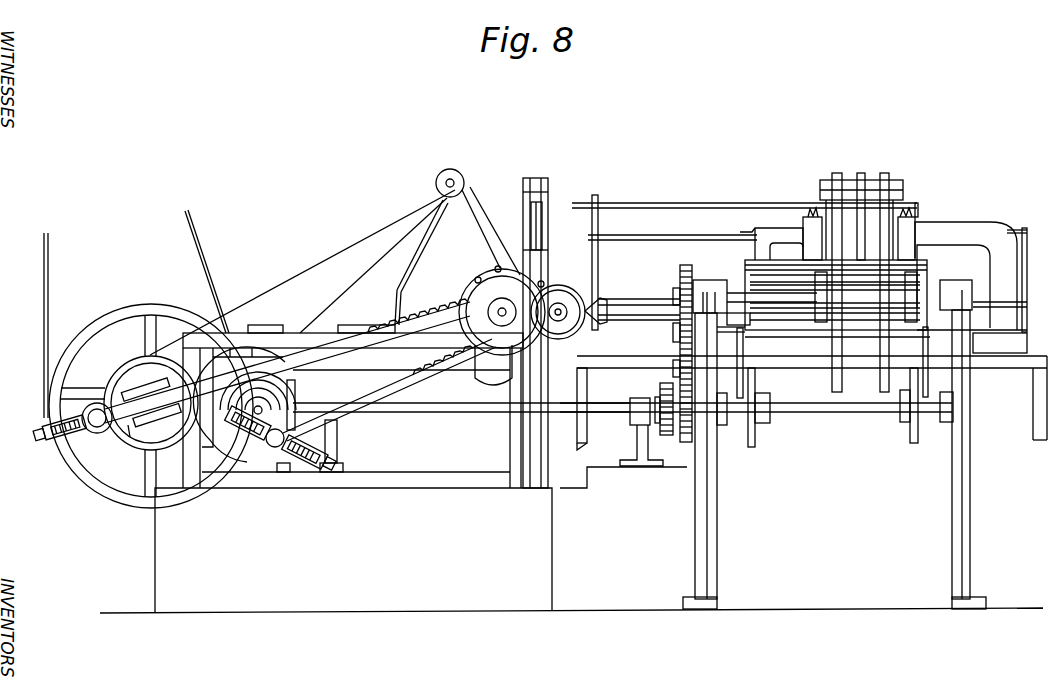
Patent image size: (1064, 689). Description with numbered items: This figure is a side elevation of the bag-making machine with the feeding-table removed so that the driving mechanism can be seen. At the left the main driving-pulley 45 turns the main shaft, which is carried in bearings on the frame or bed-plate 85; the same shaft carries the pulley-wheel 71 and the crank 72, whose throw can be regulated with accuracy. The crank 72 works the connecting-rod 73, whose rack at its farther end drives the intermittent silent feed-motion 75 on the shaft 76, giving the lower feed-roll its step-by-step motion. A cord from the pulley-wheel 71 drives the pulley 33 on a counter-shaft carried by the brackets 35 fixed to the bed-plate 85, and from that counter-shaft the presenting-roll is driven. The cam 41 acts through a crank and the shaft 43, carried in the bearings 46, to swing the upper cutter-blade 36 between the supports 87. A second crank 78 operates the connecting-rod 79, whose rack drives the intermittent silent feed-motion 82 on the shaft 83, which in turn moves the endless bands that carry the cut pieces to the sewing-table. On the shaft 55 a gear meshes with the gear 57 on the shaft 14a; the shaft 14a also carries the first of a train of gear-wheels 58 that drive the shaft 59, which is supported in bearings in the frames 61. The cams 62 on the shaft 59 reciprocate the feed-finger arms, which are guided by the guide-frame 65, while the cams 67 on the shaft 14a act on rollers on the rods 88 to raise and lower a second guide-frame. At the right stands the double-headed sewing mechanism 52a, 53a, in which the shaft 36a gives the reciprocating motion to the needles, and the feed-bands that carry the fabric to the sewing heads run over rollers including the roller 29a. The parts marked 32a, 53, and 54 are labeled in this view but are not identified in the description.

The shaft 14a is at (858, 408).
The roller 29a is at (843, 174).
The cross head 32a is at (914, 184).
The pulley 33 is at (444, 178).
The brackets 35 is at (400, 279).
The upper cutter-blade 36 is at (531, 212).
The shaft 36a is at (627, 237).
The cam 41 is at (103, 388).
The shaft 43 is at (368, 360).
The main driving-pulley 45 is at (166, 316).
The bearings 46 is at (472, 378).
The double-headed sewing mechanism 52a is at (957, 225).
The cam 53 is at (239, 404).
The double-headed sewing mechanism 53a is at (755, 230).
The cam roller 54 is at (300, 396).
The shaft 55 is at (622, 422).
The gear 57 is at (660, 387).
The train of gear-wheels 58 is at (676, 281).
The shaft 59 is at (767, 311).
The frames 61 is at (705, 290).
The cams 62 is at (832, 347).
The guide-frame 65 is at (922, 278).
The cams 67 is at (755, 445).
The pulley-wheel 71 is at (151, 403).
The crank 72 is at (57, 440).
The connecting-rod 73 is at (136, 420).
The intermittent silent feed-motion 75 is at (502, 310).
The shaft 76 is at (505, 310).
The crank 78 is at (305, 470).
The connecting-rod 79 is at (367, 406).
The intermittent silent feed-motion 82 is at (605, 310).
The shaft 83 is at (558, 306).
The frame or bed-plate 85 is at (353, 406).
The supports 87 is at (535, 318).
The rods 88 is at (812, 383).